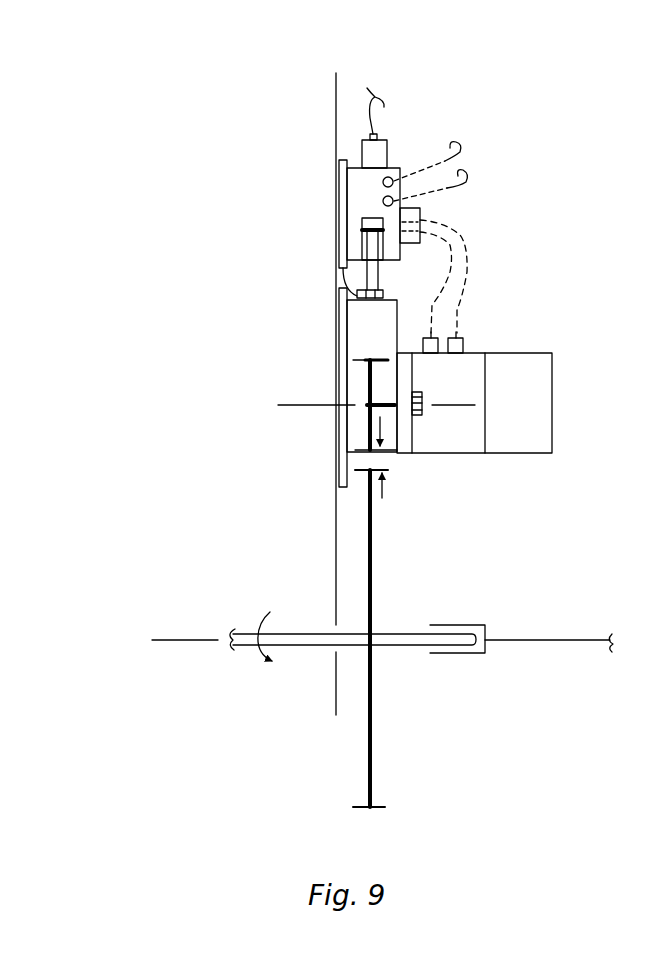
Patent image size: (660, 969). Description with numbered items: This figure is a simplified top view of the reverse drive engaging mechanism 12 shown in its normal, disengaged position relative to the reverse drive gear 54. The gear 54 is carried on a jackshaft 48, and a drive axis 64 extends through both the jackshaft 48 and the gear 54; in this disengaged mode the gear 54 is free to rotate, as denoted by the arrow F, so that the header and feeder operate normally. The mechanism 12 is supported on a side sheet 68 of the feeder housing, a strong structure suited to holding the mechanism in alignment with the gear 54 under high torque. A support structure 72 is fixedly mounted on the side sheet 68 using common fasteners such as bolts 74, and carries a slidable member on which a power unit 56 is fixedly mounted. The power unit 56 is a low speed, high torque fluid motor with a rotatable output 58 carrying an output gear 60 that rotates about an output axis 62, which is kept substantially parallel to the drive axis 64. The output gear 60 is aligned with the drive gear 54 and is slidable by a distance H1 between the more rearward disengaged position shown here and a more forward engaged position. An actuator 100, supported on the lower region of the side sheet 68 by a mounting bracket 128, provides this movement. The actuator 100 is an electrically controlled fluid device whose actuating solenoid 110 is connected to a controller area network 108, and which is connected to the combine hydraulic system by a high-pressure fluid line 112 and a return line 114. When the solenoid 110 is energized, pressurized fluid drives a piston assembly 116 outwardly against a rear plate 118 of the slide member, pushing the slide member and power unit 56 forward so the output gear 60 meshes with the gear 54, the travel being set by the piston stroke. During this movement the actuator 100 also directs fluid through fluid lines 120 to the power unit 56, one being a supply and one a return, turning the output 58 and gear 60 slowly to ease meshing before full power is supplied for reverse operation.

The side sheet 68 is at (340, 82).
The mounting bracket 128 is at (340, 197).
The rear plate 118 is at (339, 272).
The actuator 100 is at (401, 168).
The actuating solenoid 110 is at (398, 168).
The controller area network 108 is at (369, 118).
The high-pressure fluid line 112 is at (460, 152).
The return line 114 is at (466, 186).
The fluid lines 120 is at (456, 253).
The piston assembly 116 is at (375, 275).
The support structure 72 is at (343, 289).
The reverse drive gear 54 is at (378, 808).
The rotatable output 58 is at (383, 400).
The output gear 60 is at (368, 426).
The output axis 62 is at (284, 403).
The distance H1 is at (386, 493).
The power unit 56 is at (552, 378).
The bolts 74 is at (423, 413).
The reverse drive engaging mechanism 12 is at (574, 464).
The jackshaft 48 is at (250, 648).
The drive axis 64 is at (172, 638).
The arrow F is at (277, 620).